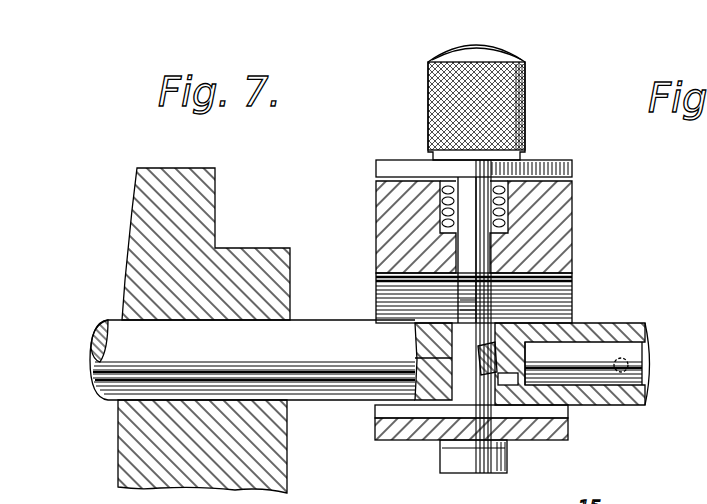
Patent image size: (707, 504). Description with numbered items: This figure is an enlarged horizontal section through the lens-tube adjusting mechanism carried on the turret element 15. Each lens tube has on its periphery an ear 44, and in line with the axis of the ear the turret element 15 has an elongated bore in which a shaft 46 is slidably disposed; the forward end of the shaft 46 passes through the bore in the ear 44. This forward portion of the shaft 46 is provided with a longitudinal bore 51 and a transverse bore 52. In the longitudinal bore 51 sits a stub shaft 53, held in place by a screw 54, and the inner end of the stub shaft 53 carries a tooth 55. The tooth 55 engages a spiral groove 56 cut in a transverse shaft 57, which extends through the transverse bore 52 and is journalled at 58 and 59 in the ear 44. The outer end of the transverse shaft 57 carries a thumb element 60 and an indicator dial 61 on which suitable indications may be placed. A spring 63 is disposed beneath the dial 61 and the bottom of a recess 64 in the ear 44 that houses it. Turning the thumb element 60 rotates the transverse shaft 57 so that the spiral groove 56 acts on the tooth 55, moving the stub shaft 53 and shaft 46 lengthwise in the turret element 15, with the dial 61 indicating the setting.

The turret element 15 is at (198, 228).
The ear 44 is at (553, 255).
The shaft 46 is at (305, 325).
The longitudinal bore 51 is at (590, 342).
The transverse bore 52 is at (437, 346).
The stub shaft 53 is at (647, 329).
The screw 54 is at (627, 366).
The tooth 55 is at (570, 286).
The spiral groove 56 is at (472, 318).
The transverse shaft 57 is at (492, 244).
The journal 58 is at (441, 437).
The journal 59 is at (455, 325).
The thumb element 60 is at (527, 98).
The indicator dial 61 is at (537, 162).
The spring 63 is at (456, 258).
The recess 64 is at (512, 215).